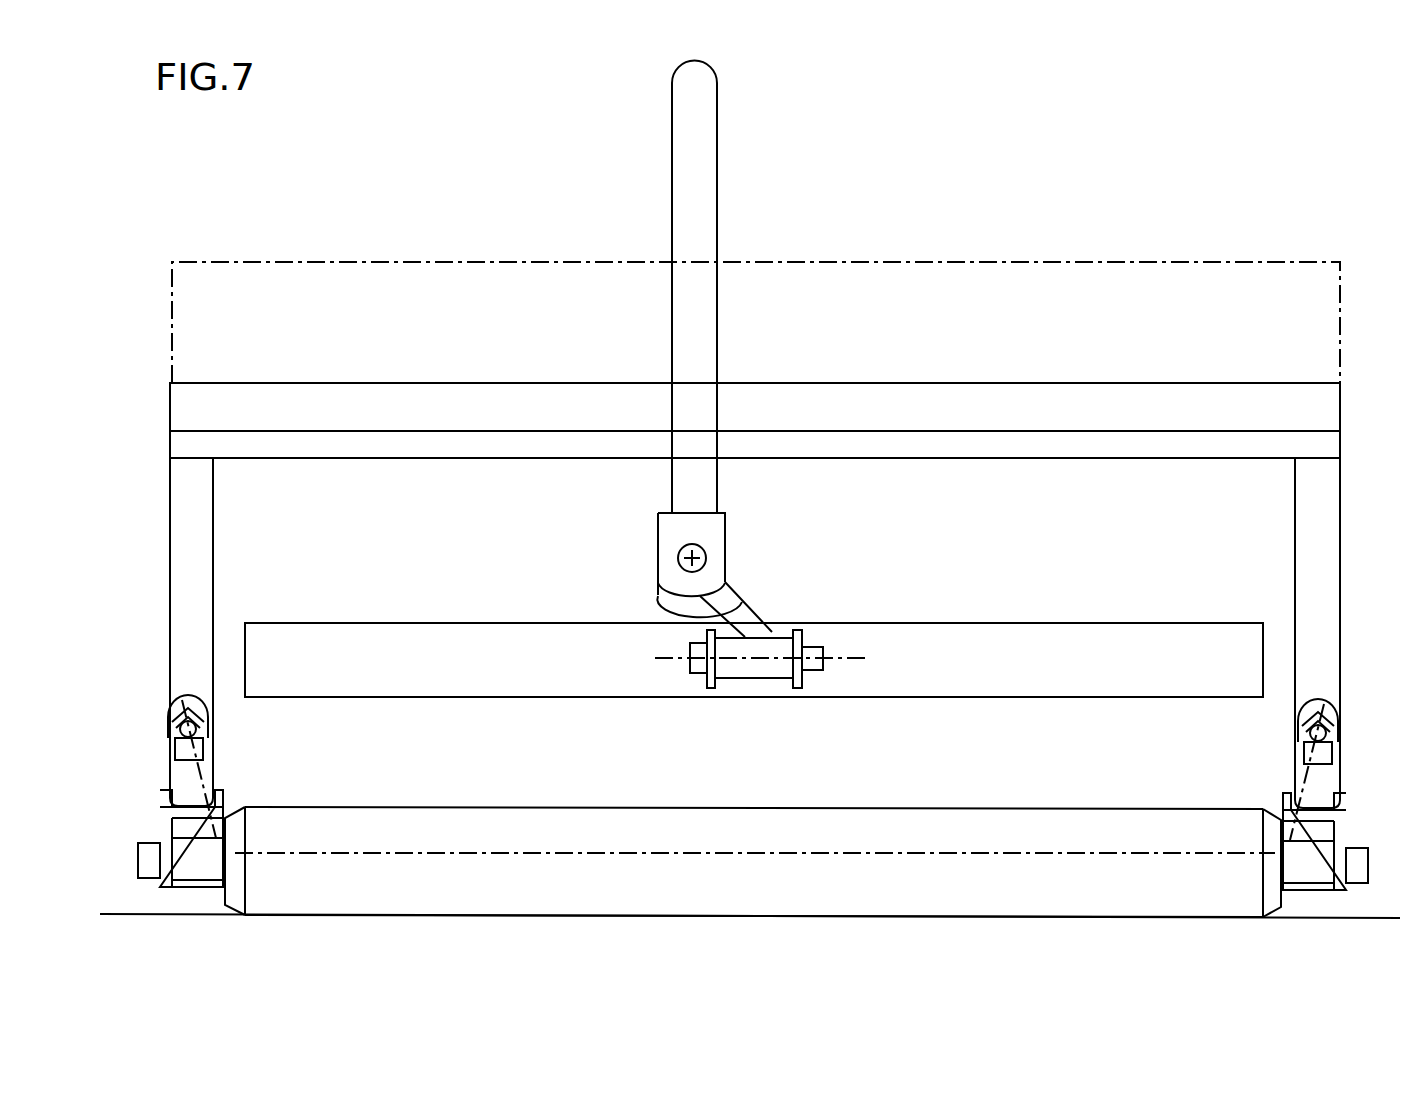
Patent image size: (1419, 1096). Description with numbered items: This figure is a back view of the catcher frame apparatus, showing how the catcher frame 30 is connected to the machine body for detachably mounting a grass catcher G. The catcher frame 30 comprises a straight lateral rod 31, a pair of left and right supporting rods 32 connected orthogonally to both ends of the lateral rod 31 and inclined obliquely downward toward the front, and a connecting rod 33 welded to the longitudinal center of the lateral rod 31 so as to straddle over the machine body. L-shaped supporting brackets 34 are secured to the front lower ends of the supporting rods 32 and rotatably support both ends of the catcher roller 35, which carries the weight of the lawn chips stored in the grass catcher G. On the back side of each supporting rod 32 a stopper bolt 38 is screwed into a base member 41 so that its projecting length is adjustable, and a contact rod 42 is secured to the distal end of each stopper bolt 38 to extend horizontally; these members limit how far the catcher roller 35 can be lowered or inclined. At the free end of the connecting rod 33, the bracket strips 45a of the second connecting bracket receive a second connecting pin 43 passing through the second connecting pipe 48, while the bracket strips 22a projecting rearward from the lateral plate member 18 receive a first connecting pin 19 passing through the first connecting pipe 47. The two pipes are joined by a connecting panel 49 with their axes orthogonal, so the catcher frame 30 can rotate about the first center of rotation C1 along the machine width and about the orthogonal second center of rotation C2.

The connecting rod 33 is at (705, 157).
The grass catcher G is at (1060, 263).
The catcher frame 30 is at (722, 354).
The lateral rod 31 is at (1069, 402).
The supporting rods 32 is at (200, 548).
The lateral plate member 18 is at (930, 686).
The bracket strips 45a is at (727, 503).
The second connecting pipe 48 is at (663, 607).
The connecting panel 49 is at (737, 612).
The second connecting pin 43 is at (680, 553).
The second center of rotation C2 is at (703, 557).
The first connecting pipe 47 is at (748, 670).
The first connecting pin 19 is at (817, 647).
The bracket strips 22a is at (703, 677).
The first center of rotation C1 is at (775, 683).
The catcher roller 35 is at (1032, 822).
The supporting brackets 34 is at (160, 818).
The base members 41 is at (190, 697).
The stopper bolts 38 is at (205, 727).
The contact rod 42 is at (205, 748).